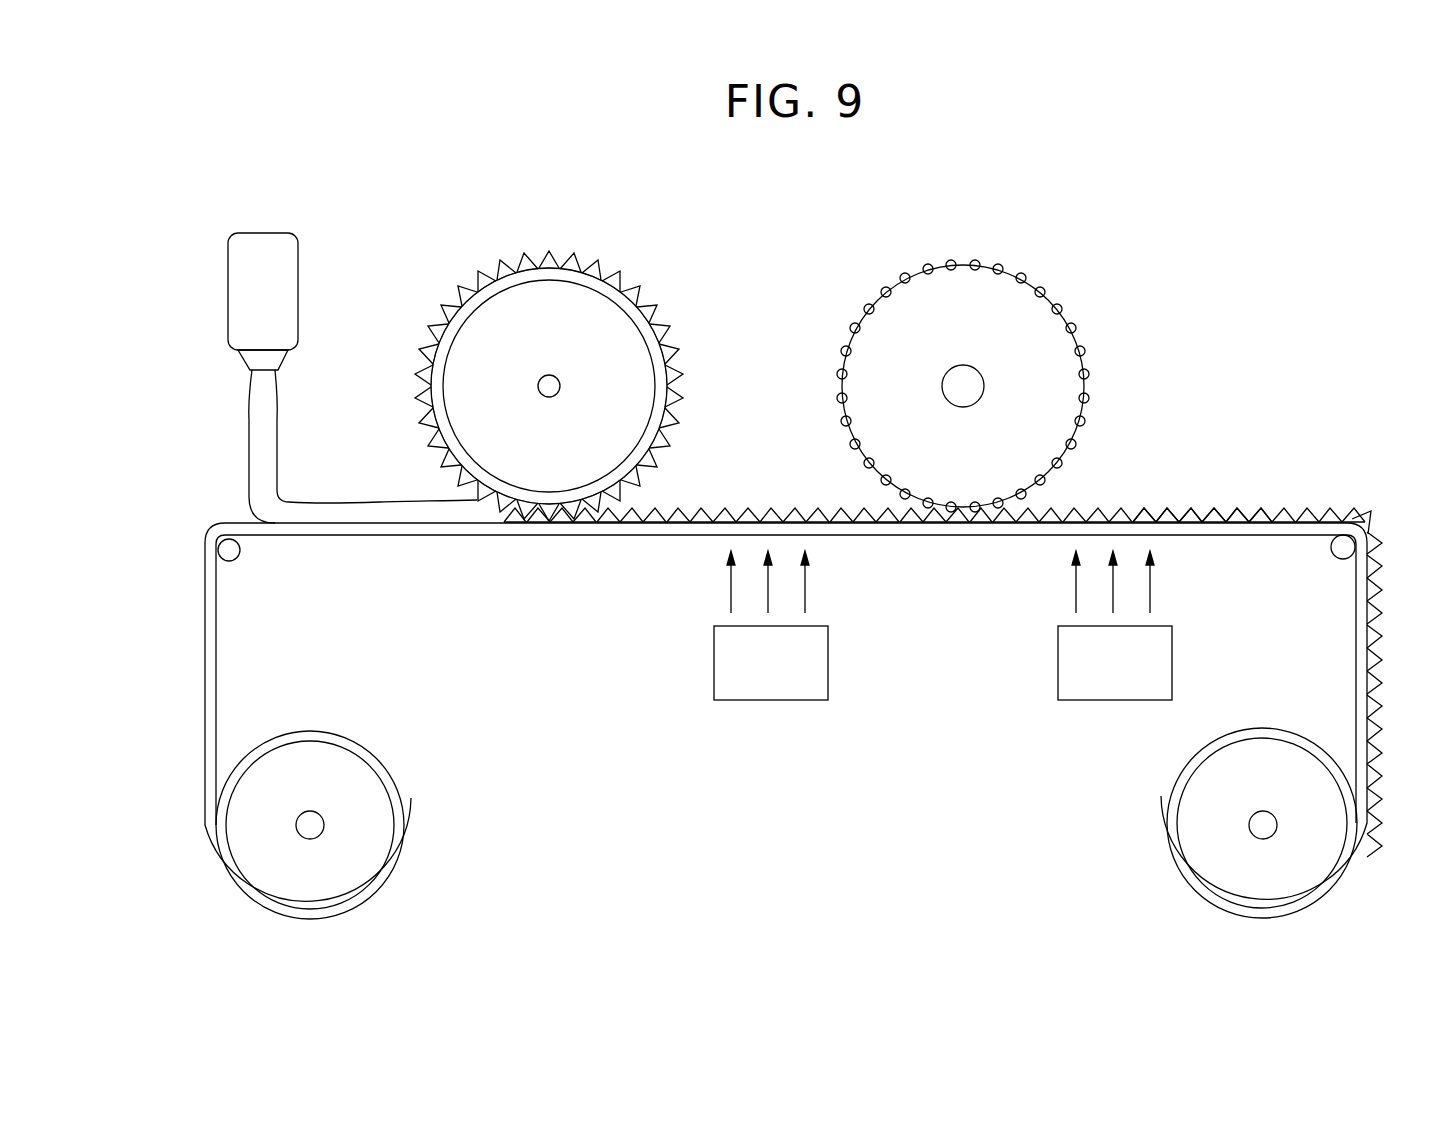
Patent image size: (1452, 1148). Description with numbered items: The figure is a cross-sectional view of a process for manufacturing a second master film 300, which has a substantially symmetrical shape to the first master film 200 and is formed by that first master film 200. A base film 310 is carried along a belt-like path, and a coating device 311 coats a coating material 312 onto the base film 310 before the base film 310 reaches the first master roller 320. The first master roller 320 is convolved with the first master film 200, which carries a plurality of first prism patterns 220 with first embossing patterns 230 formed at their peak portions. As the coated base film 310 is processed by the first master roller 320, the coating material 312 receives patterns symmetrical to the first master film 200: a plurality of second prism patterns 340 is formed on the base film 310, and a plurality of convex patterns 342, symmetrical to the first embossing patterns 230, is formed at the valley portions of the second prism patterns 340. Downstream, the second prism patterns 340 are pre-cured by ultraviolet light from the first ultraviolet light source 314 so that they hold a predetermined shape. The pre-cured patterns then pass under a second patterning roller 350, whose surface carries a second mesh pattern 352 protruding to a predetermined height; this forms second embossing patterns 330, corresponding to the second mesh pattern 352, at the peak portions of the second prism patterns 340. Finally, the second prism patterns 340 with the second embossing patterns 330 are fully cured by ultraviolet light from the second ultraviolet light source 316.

The first master film 200 is at (570, 280).
The first prism patterns 220 is at (633, 287).
The first embossing patterns 230 is at (617, 277).
The second master film 300 is at (1363, 492).
The base film 310 is at (216, 658).
The coating device 311 is at (237, 292).
The coating material 312 is at (257, 458).
The first ultraviolet light source 314 is at (766, 690).
The second ultraviolet light source 316 is at (1112, 690).
The first master roller 320 is at (557, 297).
The second embossing patterns 330 is at (1193, 515).
The second prism patterns 340 is at (1160, 513).
The convex patterns 342 is at (1253, 515).
The second patterning roller 350 is at (963, 277).
The second mesh pattern 352 is at (997, 267).